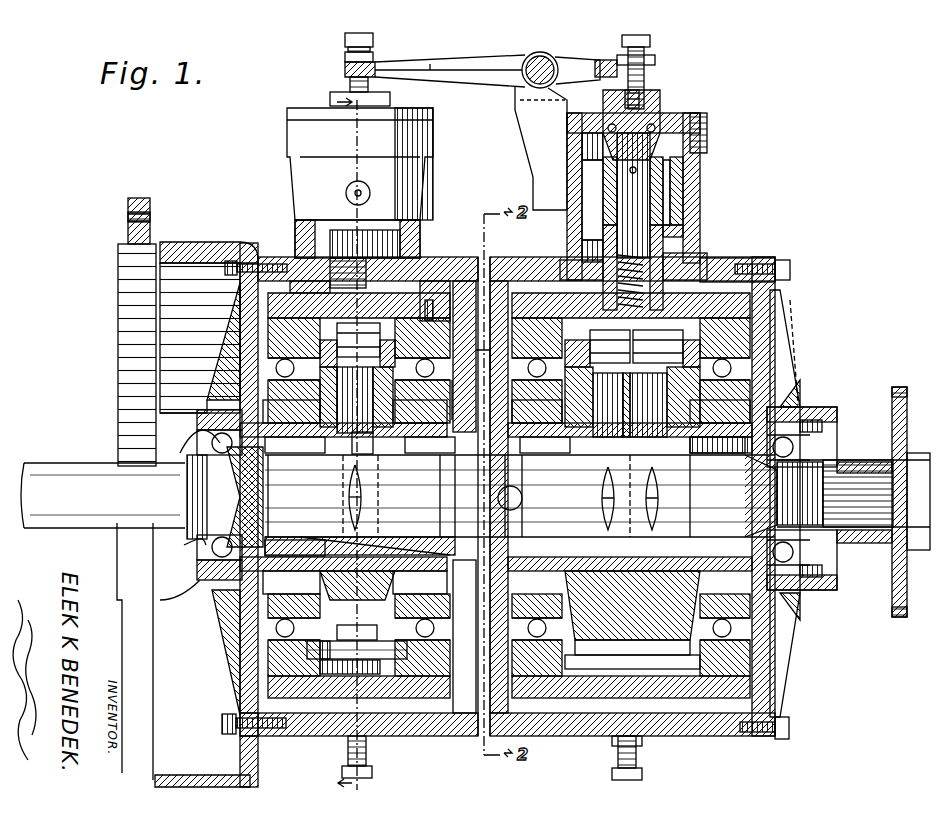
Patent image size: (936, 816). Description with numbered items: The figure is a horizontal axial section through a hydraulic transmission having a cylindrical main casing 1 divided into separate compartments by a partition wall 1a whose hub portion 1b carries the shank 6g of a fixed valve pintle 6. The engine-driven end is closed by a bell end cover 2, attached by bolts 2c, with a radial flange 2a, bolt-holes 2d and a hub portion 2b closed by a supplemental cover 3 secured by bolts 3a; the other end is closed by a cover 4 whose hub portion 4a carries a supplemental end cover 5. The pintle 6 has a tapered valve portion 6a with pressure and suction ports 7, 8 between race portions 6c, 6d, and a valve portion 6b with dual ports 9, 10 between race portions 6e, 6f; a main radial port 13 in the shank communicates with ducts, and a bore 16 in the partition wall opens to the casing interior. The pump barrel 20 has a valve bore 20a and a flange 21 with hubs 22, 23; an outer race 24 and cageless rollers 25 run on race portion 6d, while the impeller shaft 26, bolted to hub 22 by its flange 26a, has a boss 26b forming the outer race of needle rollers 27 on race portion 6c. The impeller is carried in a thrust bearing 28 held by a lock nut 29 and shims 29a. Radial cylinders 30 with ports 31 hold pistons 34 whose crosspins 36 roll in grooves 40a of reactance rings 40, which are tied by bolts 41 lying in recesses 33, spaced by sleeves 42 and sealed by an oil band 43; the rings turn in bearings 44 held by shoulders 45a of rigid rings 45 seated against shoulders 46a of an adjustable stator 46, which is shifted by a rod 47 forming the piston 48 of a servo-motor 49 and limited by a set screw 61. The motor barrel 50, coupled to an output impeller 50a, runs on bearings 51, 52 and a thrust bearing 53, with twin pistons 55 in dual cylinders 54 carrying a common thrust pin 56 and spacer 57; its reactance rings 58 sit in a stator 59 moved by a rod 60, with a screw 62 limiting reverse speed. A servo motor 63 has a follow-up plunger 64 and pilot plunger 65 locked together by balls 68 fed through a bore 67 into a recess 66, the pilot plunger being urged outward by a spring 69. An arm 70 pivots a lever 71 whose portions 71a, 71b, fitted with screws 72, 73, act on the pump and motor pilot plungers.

The main casing 1 is at (458, 258).
The partition wall 1a is at (474, 697).
The central hub portion 1b is at (500, 574).
The bell end cover 2 is at (200, 246).
The radial flange 2a is at (128, 208).
The hub portion 2b is at (220, 597).
The bolts 2c is at (254, 738).
The bolt-holes 2d is at (150, 218).
The supplemental cover 3 is at (104, 543).
The bolts 3a is at (170, 600).
The rigid cover 4 is at (776, 304).
The central hub portion 4a is at (790, 392).
The supplemental end cover 5 is at (802, 422).
The valve pintle 6 is at (398, 496).
The valve portion 6a is at (383, 496).
The valve portion 6b is at (627, 496).
The race portion 6c is at (283, 496).
The race portion 6d is at (426, 496).
The race portion 6e is at (540, 496).
The race portion 6f is at (707, 496).
The shank portion 6g is at (537, 415).
The pressure port 7 is at (348, 476).
The suction port 8 is at (348, 494).
The dual pressure ports 9 is at (600, 481).
The dual suction ports 10 is at (635, 497).
The main radial port 13 is at (504, 490).
The bore 16 is at (480, 496).
The barrel 20 is at (390, 588).
The axial valve bore 20a is at (360, 535).
The radial flange portion 21 is at (363, 585).
The hub portion 22 is at (345, 365).
The hub portion 23 is at (440, 414).
The outer bearing race 24 is at (422, 370).
The rollers 25 is at (430, 458).
The impeller shaft 26 is at (116, 476).
The radial flange portion 26a is at (280, 574).
The hollow boss 26b is at (359, 634).
The needle rollers 27 is at (295, 496).
The thrust bearing 28 is at (210, 444).
The lock nut 29 is at (190, 448).
The shims 29a is at (200, 545).
The radial cylinders 30 is at (362, 443).
The port 31 is at (363, 496).
The recesses 33 is at (357, 632).
The pistons 34 is at (356, 400).
The cross-pin 36 is at (357, 345).
The reactance rings 40 is at (355, 413).
The circumferential groove 40a is at (313, 660).
The tie bolts 41 is at (324, 662).
The sleeve compression spacers 42 is at (372, 662).
The oil retaining band 43 is at (346, 674).
The combination load and thrust bearings 44 is at (359, 499).
The rigid rings 45 is at (464, 356).
The inner radial shoulder 45a is at (471, 360).
The stator 46 is at (435, 300).
The radial shoulders 46a is at (417, 300).
The rod 47 is at (328, 275).
The piston 48 is at (310, 224).
The servo-motor 49 is at (298, 146).
The barrel 50 is at (590, 424).
The impeller 50a is at (842, 468).
The bearing 51 is at (545, 457).
The bearing 52 is at (717, 458).
The two-way thrust bearing 53 is at (792, 444).
The radial cylinders 54 is at (686, 428).
The twin pistons 55 is at (632, 402).
The thrust pin 56 is at (666, 348).
The spacer 57 is at (597, 348).
The reactance rings 58 is at (696, 316).
The stator 59 is at (658, 310).
The operating rod 60 is at (690, 264).
The set screw 61 is at (368, 766).
The adjustment screw 62 is at (641, 755).
The servo motor 63 is at (698, 162).
The follow-up plunger 64 is at (662, 192).
The pilot plunger 65 is at (642, 172).
The annular recess 66 is at (676, 118).
The axial bore 67 is at (656, 106).
The ball bearings 68 is at (708, 120).
The coil spring 69 is at (650, 256).
The rigid arm 70 is at (520, 126).
The lever 71 is at (508, 95).
The lever portion 71a is at (438, 78).
The lever portion 71b is at (597, 64).
The adjustable screw 72 is at (374, 49).
The adjustable screw 73 is at (650, 48).